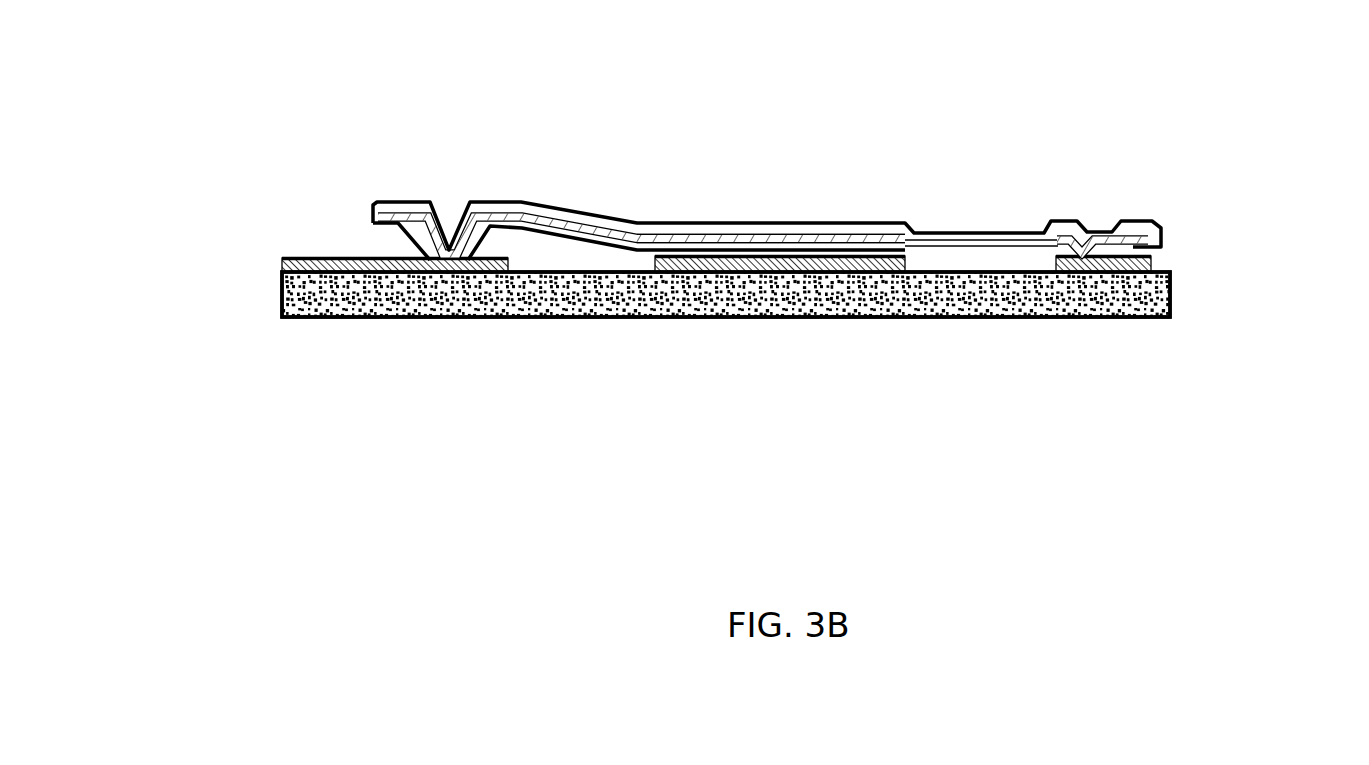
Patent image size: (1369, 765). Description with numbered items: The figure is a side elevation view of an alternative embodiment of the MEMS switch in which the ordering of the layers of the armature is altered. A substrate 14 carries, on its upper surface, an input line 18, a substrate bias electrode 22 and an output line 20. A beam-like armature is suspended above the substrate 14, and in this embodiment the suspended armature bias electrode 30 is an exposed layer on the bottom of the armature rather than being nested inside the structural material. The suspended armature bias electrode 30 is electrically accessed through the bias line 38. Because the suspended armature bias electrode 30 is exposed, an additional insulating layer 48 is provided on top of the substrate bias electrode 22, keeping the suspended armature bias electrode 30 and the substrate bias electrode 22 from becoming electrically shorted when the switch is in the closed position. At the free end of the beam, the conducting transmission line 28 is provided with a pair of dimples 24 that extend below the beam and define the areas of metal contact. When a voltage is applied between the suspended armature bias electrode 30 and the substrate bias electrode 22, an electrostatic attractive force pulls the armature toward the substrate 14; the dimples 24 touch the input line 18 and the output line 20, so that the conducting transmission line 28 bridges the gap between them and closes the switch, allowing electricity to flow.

The substrate 14 is at (347, 320).
The input line 18 is at (310, 258).
The output line 20 is at (1053, 272).
The substrate bias electrode 22 is at (810, 263).
The dimples 24 is at (1170, 278).
The conducting transmission line 28 is at (522, 200).
The suspended armature bias electrode 30 is at (580, 213).
The bias line 38 is at (956, 214).
The insulating layer 48 is at (753, 237).